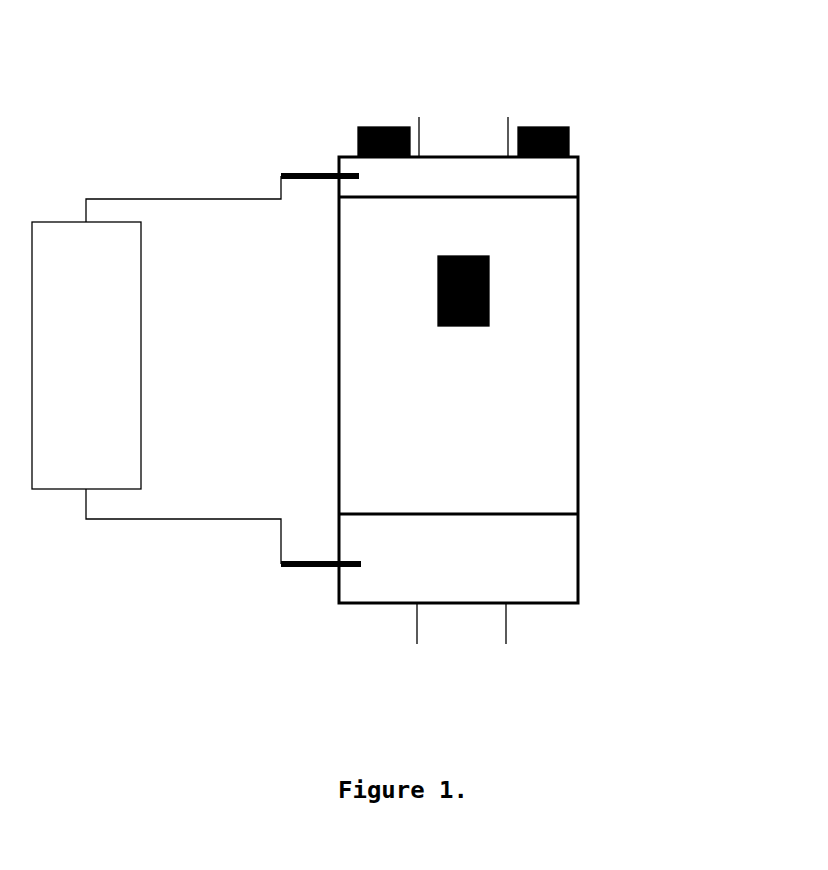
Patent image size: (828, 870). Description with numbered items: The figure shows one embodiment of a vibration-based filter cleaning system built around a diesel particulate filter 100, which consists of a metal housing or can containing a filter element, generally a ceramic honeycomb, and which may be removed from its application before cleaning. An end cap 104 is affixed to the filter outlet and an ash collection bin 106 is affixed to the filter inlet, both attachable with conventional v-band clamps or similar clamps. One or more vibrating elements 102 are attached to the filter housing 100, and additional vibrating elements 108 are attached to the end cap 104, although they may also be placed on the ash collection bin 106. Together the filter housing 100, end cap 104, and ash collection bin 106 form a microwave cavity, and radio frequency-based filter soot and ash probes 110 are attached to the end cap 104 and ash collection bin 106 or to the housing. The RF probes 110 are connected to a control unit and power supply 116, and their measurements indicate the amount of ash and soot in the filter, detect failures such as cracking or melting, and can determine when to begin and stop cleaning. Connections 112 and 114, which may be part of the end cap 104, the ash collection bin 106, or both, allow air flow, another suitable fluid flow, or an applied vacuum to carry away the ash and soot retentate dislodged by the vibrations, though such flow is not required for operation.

The diesel particulate filter 100 is at (599, 417).
The vibrating element 102 is at (462, 346).
The end cap 104 is at (590, 173).
The ash collection bin 106 is at (597, 543).
The additional vibrating elements 108 is at (350, 127).
The radio frequency-based filter soot and ash probes 110 is at (312, 197).
The connection 112 is at (458, 118).
The connection 114 is at (463, 620).
The control unit and power supply 116 is at (156, 370).